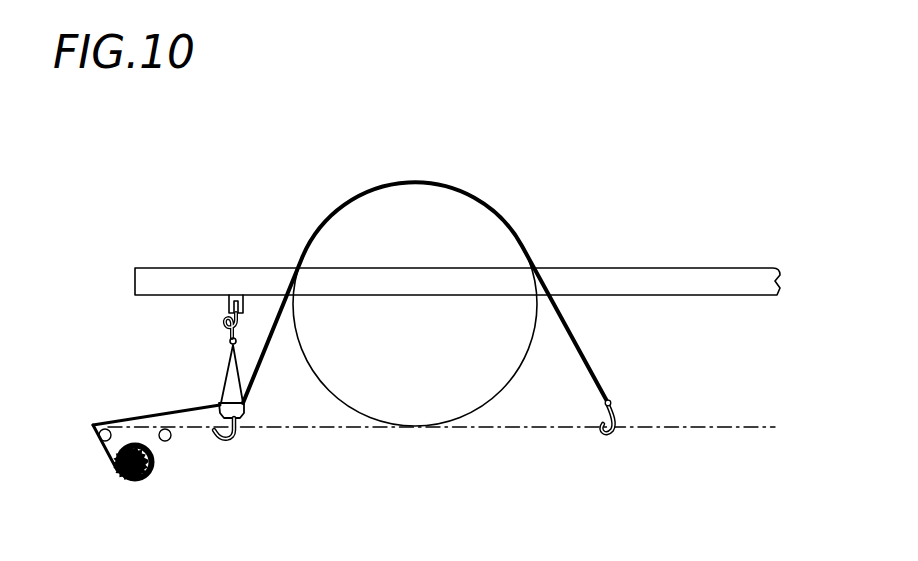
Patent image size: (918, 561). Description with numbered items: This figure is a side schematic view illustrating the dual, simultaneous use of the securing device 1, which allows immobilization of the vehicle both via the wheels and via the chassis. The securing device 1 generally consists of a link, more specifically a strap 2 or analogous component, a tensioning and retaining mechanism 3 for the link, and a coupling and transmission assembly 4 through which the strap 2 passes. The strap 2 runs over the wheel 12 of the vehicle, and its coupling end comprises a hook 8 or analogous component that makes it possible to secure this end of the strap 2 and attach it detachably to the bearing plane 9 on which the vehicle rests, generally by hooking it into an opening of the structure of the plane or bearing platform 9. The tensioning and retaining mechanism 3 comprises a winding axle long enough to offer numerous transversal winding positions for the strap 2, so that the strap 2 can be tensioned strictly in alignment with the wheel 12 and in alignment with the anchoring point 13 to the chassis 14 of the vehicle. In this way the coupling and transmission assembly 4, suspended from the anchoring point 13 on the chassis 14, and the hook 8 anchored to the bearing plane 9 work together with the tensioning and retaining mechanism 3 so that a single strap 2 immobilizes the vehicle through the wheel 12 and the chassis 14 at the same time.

The securing device 1 is at (164, 376).
The strap 2 is at (589, 337).
The tensioning and retaining mechanism 3 is at (162, 479).
The coupling and transmission assembly 4 is at (239, 449).
The hook 8 is at (613, 404).
The bearing plane 9 is at (728, 428).
The wheel 12 is at (505, 218).
The anchoring point 13 is at (248, 302).
The chassis 14 is at (697, 277).